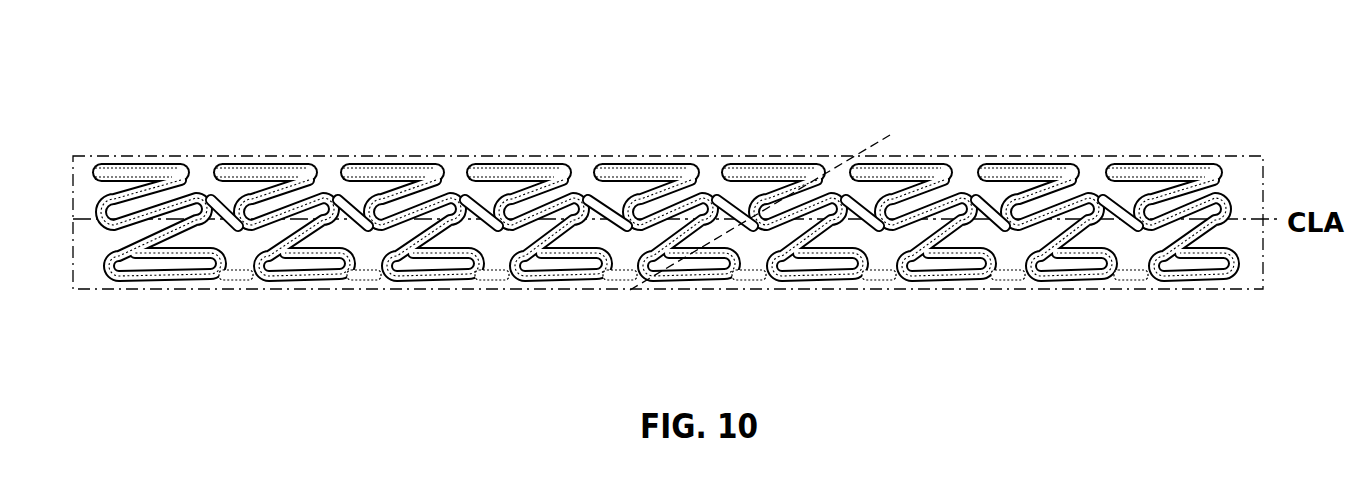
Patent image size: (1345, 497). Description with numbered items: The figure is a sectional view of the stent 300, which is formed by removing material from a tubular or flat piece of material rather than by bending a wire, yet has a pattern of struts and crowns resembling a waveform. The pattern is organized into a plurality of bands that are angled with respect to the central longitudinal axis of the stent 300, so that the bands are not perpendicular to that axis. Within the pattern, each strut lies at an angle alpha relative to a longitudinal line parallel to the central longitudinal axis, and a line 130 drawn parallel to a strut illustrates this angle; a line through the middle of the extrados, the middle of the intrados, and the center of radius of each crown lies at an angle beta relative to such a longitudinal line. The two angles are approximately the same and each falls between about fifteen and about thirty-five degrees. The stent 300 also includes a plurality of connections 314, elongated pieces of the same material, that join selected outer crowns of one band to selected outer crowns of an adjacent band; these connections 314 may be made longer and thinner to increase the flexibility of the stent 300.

The stent 300 is at (325, 110).
The connections 314 is at (605, 213).
The strut segment 130 is at (495, 290).